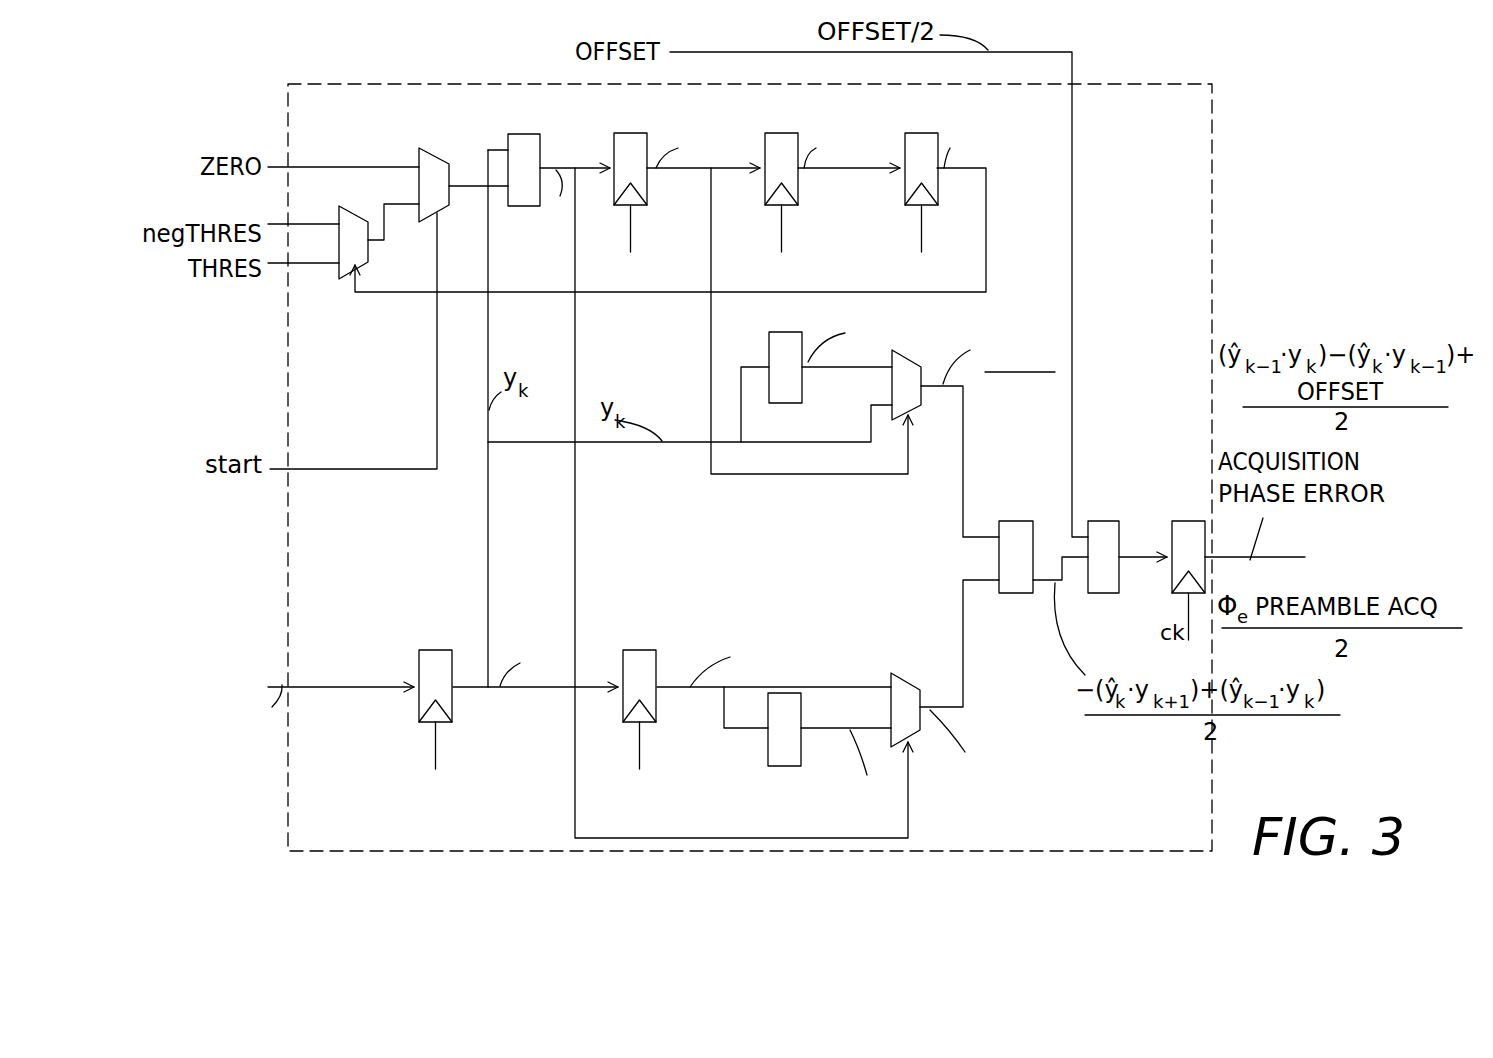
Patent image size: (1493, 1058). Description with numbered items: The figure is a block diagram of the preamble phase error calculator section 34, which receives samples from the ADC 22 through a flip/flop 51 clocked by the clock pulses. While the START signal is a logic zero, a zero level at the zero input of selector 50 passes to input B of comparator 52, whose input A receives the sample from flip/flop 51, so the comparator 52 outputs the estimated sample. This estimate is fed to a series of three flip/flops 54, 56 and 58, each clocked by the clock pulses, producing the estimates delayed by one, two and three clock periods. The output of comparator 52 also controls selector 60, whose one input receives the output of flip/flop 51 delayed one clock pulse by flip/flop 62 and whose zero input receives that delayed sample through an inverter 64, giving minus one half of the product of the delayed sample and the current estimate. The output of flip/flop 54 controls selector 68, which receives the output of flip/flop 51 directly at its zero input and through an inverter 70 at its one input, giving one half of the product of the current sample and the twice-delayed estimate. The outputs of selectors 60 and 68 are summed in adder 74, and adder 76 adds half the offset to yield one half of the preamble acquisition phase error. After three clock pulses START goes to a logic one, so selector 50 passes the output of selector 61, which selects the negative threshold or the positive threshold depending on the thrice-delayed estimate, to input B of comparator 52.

The analog-to-digital converter 22 is at (270, 680).
The preamble phase error calculator section 34 is at (318, 83).
The selector 50 is at (432, 160).
The flip/flop 51 is at (435, 650).
The comparator 52 is at (540, 152).
The flip/flop 54 is at (647, 185).
The flip/flop 56 is at (798, 185).
The flip/flop 58 is at (913, 206).
The selector 60 is at (900, 675).
The selector 61 is at (343, 278).
The flip/flop 62 is at (645, 650).
The inverter 64 is at (790, 766).
The selector 68 is at (905, 352).
The inverter 70 is at (792, 332).
The adder 74 is at (1008, 521).
The adder 76 is at (1100, 521).